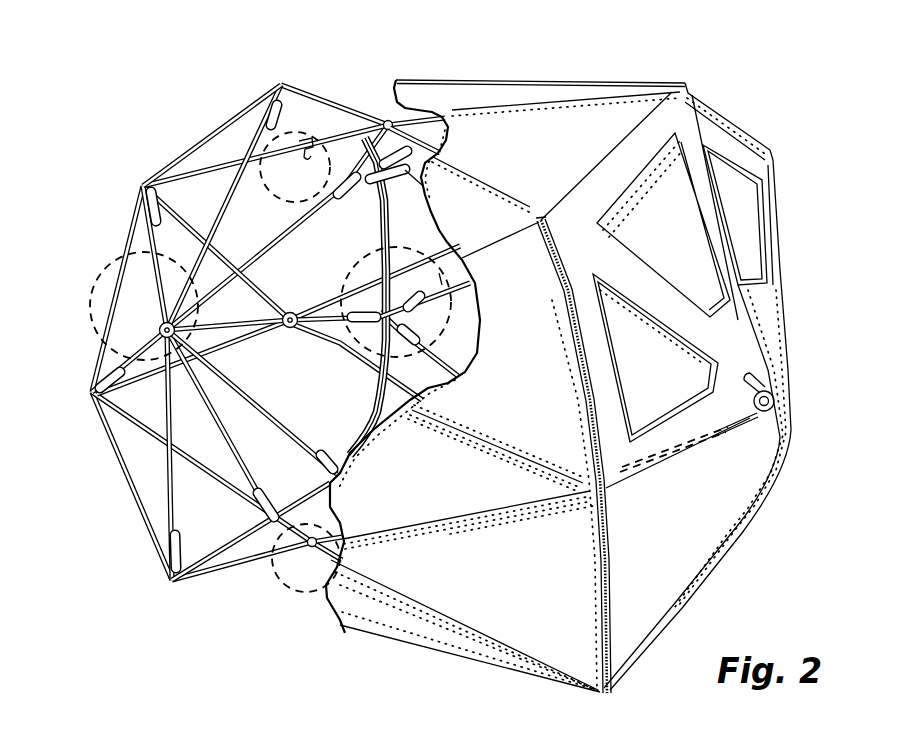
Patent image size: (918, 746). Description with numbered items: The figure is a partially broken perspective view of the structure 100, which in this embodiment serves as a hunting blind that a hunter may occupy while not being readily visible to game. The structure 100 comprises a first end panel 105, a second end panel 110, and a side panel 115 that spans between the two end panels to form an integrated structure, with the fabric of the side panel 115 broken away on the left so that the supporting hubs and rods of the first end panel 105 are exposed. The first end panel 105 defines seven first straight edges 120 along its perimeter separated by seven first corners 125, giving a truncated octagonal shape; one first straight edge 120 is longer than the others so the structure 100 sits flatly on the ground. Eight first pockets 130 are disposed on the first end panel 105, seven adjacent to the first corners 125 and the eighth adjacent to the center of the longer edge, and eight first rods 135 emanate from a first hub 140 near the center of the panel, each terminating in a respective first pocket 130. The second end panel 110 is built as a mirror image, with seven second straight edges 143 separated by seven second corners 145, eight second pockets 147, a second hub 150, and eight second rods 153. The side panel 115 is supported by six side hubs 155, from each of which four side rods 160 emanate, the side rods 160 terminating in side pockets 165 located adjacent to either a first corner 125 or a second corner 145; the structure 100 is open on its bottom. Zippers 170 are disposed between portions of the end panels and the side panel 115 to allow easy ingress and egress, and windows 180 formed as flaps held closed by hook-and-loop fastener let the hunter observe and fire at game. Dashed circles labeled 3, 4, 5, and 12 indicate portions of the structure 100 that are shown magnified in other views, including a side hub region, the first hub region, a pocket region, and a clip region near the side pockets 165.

The structure 100 is at (106, 127).
The first end panel 105 is at (127, 494).
The second end panel 110 is at (757, 508).
The side panel 115 is at (498, 93).
The first straight edges 120 is at (203, 138).
The first corners 125 is at (142, 187).
The first pockets 130 is at (162, 558).
The first rods 135 is at (255, 397).
The first hub 140 is at (158, 321).
The second straight edges 143 is at (728, 126).
The second corners 145 is at (772, 150).
The second pockets 147 is at (641, 464).
The second hub 150 is at (750, 398).
The second rods 153 is at (739, 436).
The side hubs 155 is at (293, 333).
The side rods 160 is at (286, 313).
The side pockets 165 is at (392, 198).
The zippers 170 is at (600, 605).
The windows 180 is at (680, 382).
The detail region of FIG. 3 is at (433, 255).
The detail region of FIG. 4 is at (91, 291).
The detail region of FIG. 5 is at (284, 590).
The detail region of FIG. 12 is at (271, 197).